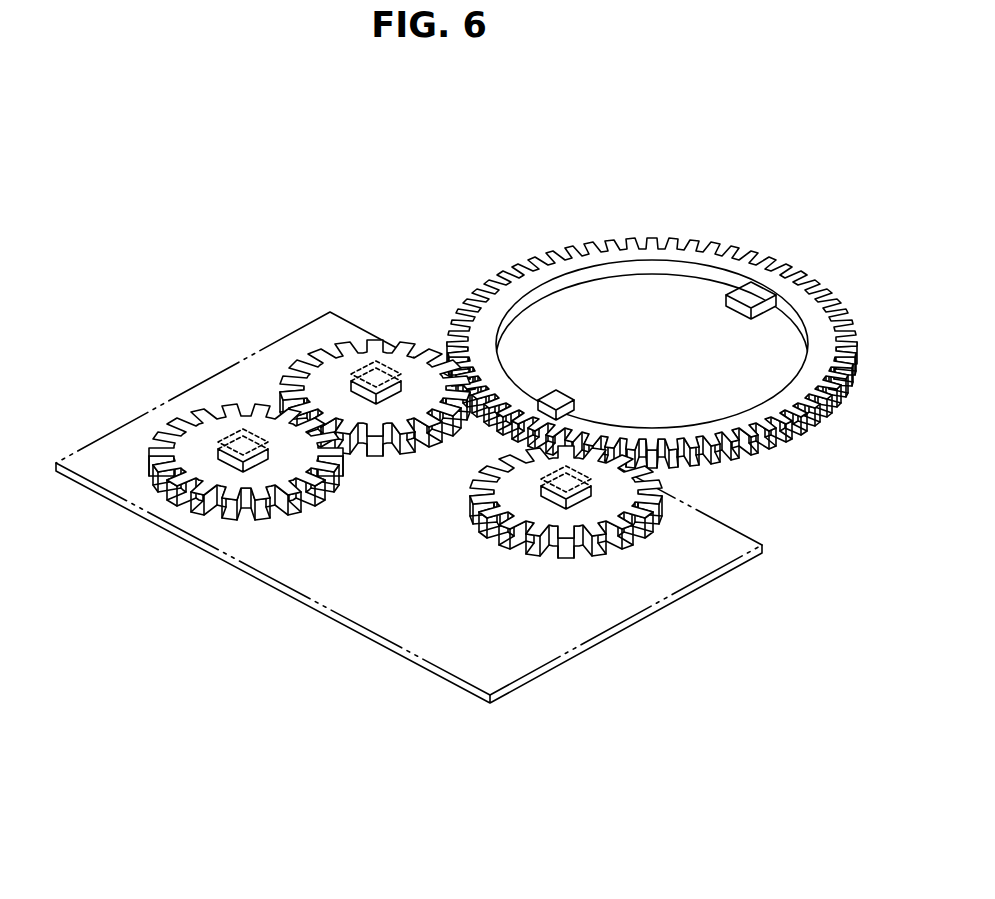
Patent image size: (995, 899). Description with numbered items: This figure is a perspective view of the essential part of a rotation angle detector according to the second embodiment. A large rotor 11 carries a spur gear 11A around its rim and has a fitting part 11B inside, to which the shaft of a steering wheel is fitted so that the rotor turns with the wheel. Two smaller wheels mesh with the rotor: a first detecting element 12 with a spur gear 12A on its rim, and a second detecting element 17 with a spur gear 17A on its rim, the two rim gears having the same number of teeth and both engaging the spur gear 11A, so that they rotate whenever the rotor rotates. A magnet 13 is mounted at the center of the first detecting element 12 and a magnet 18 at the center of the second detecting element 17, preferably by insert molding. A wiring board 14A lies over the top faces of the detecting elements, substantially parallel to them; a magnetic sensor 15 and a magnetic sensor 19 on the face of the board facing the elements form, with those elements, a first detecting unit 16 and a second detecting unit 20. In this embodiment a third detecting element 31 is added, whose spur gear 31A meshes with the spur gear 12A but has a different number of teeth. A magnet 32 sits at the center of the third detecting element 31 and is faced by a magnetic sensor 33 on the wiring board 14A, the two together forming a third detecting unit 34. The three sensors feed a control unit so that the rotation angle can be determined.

The rotor 11 is at (652, 335).
The spur gear 11A is at (792, 440).
The fitting part 11B is at (753, 292).
The first detecting element 12 is at (321, 327).
The spur gear 12A is at (408, 347).
The magnet 13 is at (357, 393).
The magnetic sensor 15 is at (373, 366).
The first detecting unit 16 is at (286, 318).
The wiring board 14A is at (567, 632).
The second detecting element 17 is at (540, 598).
The spur gear 17A is at (630, 550).
The magnet 18 is at (560, 505).
The magnetic sensor 19 is at (552, 483).
The second detecting unit 20 is at (430, 608).
The third detecting element 31 is at (189, 488).
The spur gear 31A is at (233, 522).
The magnet 32 is at (236, 467).
The magnetic sensor 33 is at (217, 456).
The third detecting unit 34 is at (152, 525).